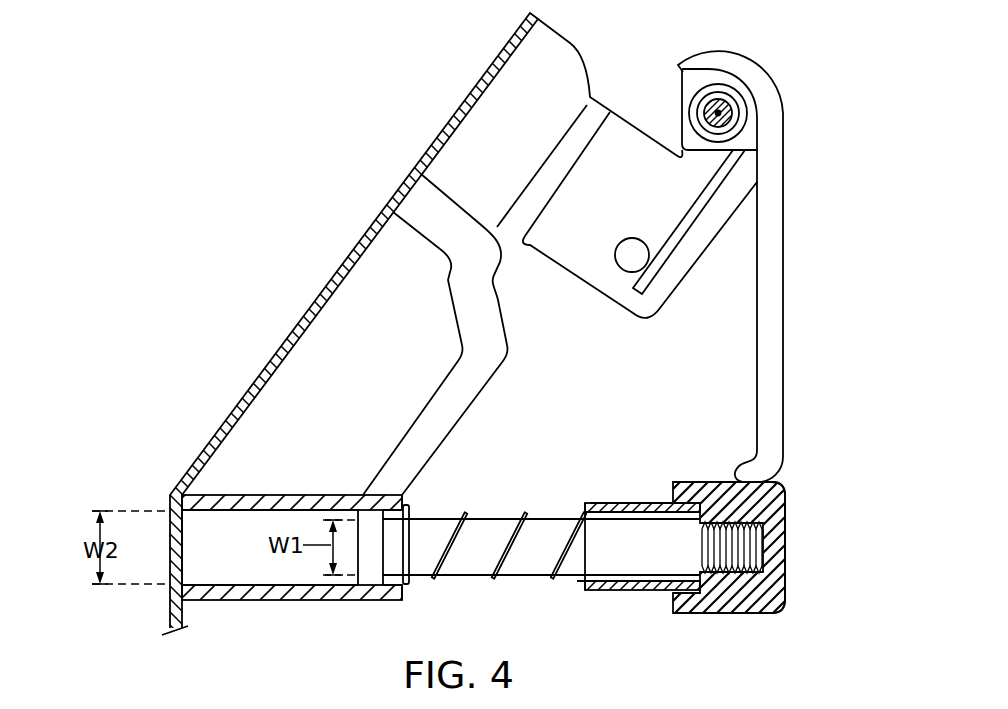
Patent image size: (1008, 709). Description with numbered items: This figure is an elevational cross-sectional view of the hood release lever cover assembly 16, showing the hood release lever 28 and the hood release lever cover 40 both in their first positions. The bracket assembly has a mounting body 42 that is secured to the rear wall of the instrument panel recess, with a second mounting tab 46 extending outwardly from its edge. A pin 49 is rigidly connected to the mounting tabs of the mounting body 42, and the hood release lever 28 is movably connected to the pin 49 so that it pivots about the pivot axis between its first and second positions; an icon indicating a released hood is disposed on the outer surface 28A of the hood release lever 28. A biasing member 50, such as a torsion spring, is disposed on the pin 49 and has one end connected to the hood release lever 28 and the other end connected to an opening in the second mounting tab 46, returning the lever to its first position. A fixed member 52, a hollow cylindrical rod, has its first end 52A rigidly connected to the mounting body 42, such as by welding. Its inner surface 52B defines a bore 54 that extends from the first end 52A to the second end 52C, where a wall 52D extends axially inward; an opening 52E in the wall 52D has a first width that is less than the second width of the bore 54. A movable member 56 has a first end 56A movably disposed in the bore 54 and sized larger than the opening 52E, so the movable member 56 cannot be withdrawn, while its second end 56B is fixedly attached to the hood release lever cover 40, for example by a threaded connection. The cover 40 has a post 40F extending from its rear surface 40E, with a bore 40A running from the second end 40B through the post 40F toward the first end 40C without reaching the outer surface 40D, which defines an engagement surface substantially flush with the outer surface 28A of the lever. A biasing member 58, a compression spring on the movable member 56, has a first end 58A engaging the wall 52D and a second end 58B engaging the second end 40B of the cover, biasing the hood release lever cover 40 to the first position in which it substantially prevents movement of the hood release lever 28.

The hood release lever cover assembly 16 is at (775, 38).
The hood release lever 28 is at (783, 263).
The outer surface of the hood release lever 28A is at (783, 357).
The hood release lever cover 40 is at (745, 563).
The bore 40A is at (638, 518).
The second end of the hood release lever cover 40B is at (583, 510).
The first end of the hood release lever cover 40C is at (786, 503).
The outer surface of the hood release lever cover 40D is at (783, 572).
The rear surface of the hood release lever cover 40E is at (673, 602).
The post 40F is at (603, 503).
The mounting body 42 is at (228, 427).
The second mounting tab 46 is at (552, 82).
The pin 49 is at (735, 108).
The biasing member 50 is at (683, 210).
The fixed member 52 is at (321, 546).
The first end of the fixed member 52A is at (205, 493).
The inner surface of the fixed member 52B is at (268, 510).
The second end of the fixed member 52C is at (388, 603).
The wall 52D is at (407, 593).
The opening 52E is at (400, 565).
The bore 54 is at (238, 552).
The movable member 56 is at (498, 519).
The first end of the movable member 56A is at (370, 530).
The second end of the movable member 56B is at (763, 535).
The biasing member 58 is at (547, 580).
The first end of the biasing member 58A is at (415, 506).
The second end of the biasing member 58B is at (582, 587).